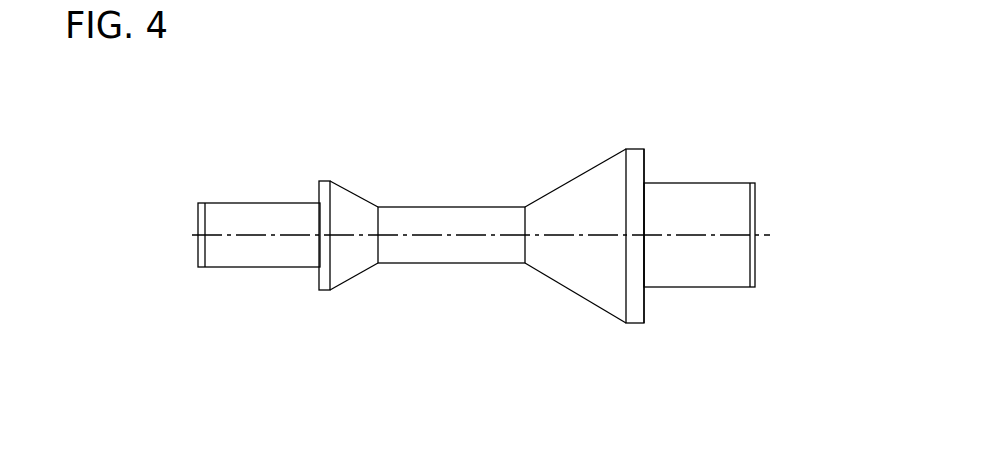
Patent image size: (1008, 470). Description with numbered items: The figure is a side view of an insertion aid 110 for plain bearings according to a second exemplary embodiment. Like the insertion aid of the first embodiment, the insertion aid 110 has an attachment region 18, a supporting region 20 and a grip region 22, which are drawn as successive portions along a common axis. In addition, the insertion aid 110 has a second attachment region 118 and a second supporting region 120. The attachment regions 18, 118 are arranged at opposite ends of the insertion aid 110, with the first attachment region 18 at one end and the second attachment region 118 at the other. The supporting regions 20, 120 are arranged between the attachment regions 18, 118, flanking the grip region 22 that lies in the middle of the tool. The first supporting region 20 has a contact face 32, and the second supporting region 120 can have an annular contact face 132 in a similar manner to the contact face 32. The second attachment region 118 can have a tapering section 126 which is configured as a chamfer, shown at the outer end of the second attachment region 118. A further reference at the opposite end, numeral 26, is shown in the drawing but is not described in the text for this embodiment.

The insertion aid 110 is at (480, 69).
The attachment region 18 is at (223, 212).
The proximal end of shaft 26 is at (197, 265).
The contact face 32 is at (316, 198).
The supporting region 20 is at (321, 178).
The grip region 22 is at (458, 210).
The second supporting region 120 is at (630, 147).
The annular contact face 132 is at (646, 166).
The second attachment region 118 is at (703, 278).
The tapering section 126 is at (758, 284).